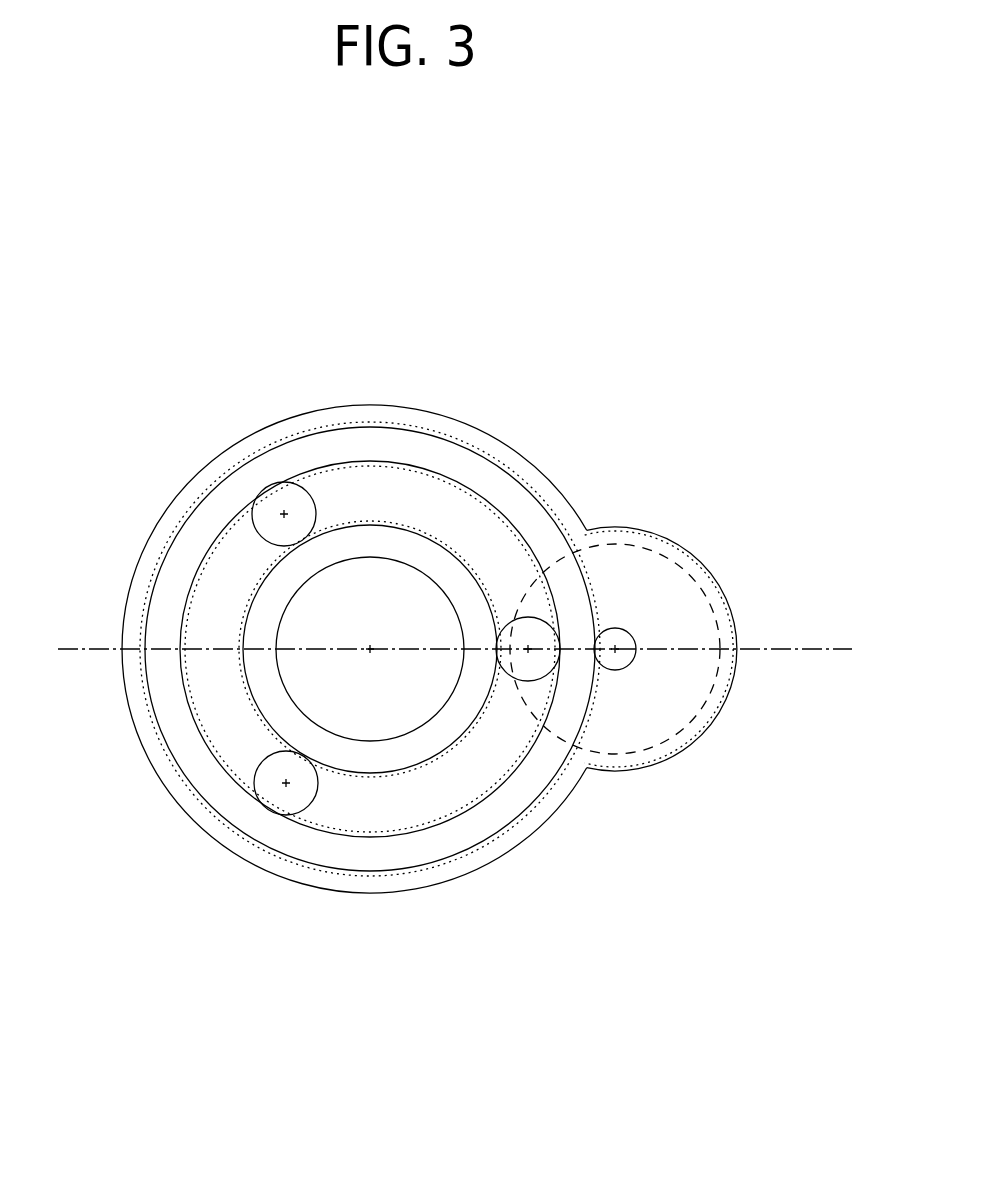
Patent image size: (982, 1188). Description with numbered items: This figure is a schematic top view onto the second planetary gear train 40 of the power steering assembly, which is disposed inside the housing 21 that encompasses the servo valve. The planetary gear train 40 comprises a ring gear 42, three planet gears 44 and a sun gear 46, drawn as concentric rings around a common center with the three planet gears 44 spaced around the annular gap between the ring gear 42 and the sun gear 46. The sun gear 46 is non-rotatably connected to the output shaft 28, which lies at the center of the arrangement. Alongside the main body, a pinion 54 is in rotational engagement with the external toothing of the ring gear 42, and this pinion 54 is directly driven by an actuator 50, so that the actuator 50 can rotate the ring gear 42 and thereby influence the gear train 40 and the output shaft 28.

The housing 21 is at (285, 427).
The output shaft 28 is at (388, 603).
The second planetary gear train 40 is at (212, 828).
The ring gear 42 is at (282, 845).
The planet gears 44 is at (272, 530).
The sun gear 46 is at (410, 745).
The actuator 50 is at (657, 595).
The pinion 54 is at (620, 655).